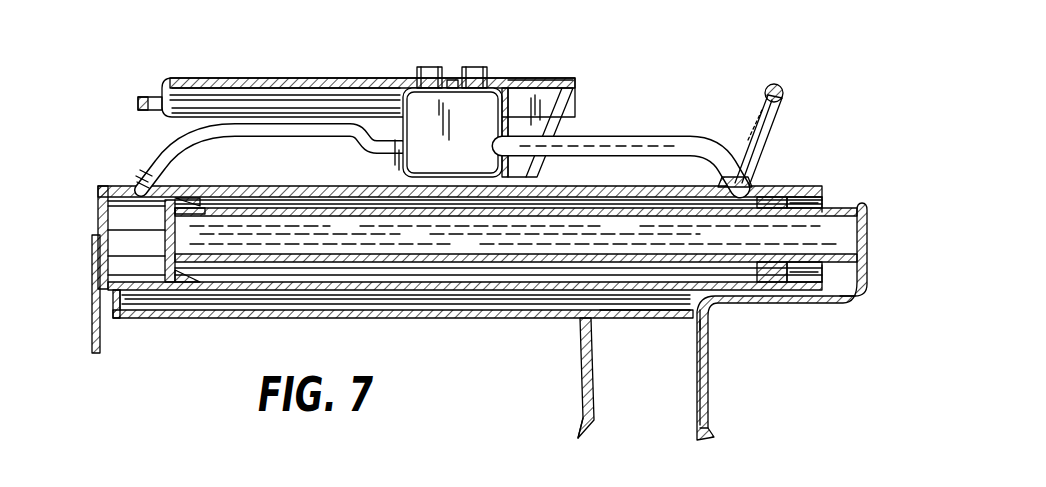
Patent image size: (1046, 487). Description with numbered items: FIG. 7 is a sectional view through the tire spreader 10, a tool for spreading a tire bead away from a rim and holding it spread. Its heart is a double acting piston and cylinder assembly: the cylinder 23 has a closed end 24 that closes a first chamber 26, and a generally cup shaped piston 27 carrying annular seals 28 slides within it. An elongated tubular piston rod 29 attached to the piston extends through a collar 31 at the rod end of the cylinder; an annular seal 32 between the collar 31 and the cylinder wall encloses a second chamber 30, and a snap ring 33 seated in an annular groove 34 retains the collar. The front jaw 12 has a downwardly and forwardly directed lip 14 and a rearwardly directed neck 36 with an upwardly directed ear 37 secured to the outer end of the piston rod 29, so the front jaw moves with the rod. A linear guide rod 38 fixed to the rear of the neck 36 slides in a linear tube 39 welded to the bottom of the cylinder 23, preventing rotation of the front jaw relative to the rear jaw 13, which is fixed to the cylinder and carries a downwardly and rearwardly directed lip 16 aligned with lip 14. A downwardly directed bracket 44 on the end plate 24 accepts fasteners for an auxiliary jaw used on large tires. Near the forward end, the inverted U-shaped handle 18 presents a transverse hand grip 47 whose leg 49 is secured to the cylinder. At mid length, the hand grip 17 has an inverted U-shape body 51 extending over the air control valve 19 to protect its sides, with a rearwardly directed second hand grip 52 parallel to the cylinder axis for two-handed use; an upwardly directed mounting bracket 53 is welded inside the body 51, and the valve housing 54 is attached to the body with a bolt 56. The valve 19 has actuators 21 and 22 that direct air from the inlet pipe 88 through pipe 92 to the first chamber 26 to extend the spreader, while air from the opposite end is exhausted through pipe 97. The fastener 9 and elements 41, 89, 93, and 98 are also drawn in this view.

The fastener 9 is at (368, 84).
The tire spreader 10 is at (850, 118).
The front jaw 12 is at (709, 382).
The rear jaw 13 is at (580, 360).
The lip 14 is at (713, 434).
The lip 16 is at (578, 428).
The hand grip 17 is at (262, 77).
The handle 18 is at (784, 106).
The air control valve 19 is at (478, 133).
The actuator 21 is at (428, 67).
The actuator 22 is at (474, 67).
The cylinder 23 is at (345, 263).
The closed end 24 is at (100, 204).
The first chamber 26 is at (112, 235).
The piston 27 is at (168, 240).
The annular seals 28 is at (183, 208).
The piston rod 29 is at (400, 262).
The second chamber 30 is at (460, 263).
The collar 31 is at (788, 197).
The annular seal 32 is at (772, 284).
The snap ring 33 is at (788, 292).
The annular groove 34 is at (805, 197).
The neck 36 is at (838, 302).
The ear 37 is at (868, 226).
The guide rod 38 is at (626, 320).
The tube 39 is at (260, 318).
The leg joint 41 is at (697, 338).
The bracket 44 is at (92, 330).
The hand grip 47 is at (765, 92).
The leg 49 is at (757, 128).
The body 51 is at (550, 80).
The second hand grip 52 is at (216, 78).
The mounting bracket 53 is at (528, 122).
The housing 54 is at (395, 158).
The bolt 56 is at (452, 80).
The inlet pipe 88 is at (305, 95).
The flange 89 is at (152, 97).
The pipe 92 is at (250, 133).
The tube end 93 is at (128, 184).
The pipe 97 is at (642, 137).
The fitting 98 is at (757, 180).